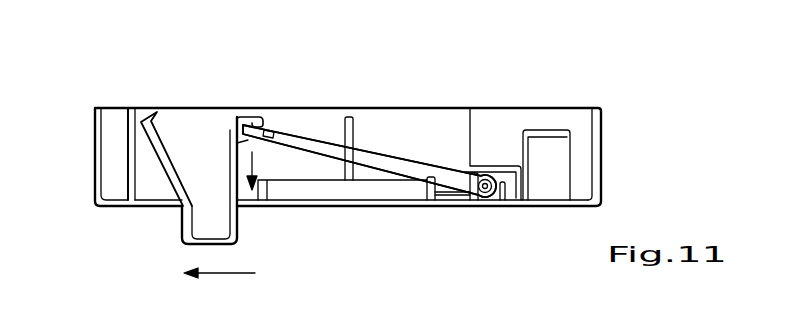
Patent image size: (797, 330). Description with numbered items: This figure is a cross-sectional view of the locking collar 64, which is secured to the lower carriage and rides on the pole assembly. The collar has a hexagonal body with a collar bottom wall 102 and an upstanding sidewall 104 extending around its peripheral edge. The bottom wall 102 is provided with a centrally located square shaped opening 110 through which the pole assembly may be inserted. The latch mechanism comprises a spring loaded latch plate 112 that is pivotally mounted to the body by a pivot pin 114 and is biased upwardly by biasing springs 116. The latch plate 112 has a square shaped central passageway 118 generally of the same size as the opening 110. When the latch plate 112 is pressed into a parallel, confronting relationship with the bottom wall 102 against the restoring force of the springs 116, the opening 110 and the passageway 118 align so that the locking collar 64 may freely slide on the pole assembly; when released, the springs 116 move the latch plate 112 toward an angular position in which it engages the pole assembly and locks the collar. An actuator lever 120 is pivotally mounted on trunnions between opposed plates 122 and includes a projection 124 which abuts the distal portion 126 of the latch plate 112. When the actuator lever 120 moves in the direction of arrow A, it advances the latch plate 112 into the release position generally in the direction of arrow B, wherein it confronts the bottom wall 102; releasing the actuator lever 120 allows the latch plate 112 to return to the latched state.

The locking collar 64 is at (597, 101).
The collar bottom wall 102 is at (450, 204).
The upstanding sidewall 104 is at (542, 128).
The square shaped opening 110 is at (382, 196).
The spring loaded latch plate 112 is at (285, 124).
The pivot pin 114 is at (481, 170).
The biasing springs 116 is at (473, 202).
The square shaped central passageway 118 is at (391, 152).
The actuator lever 120 is at (173, 186).
The opposed plates 122 is at (148, 181).
The projection 124 is at (262, 116).
The distal portion 126 is at (268, 134).
The arrow A is at (219, 282).
The arrow B is at (262, 130).